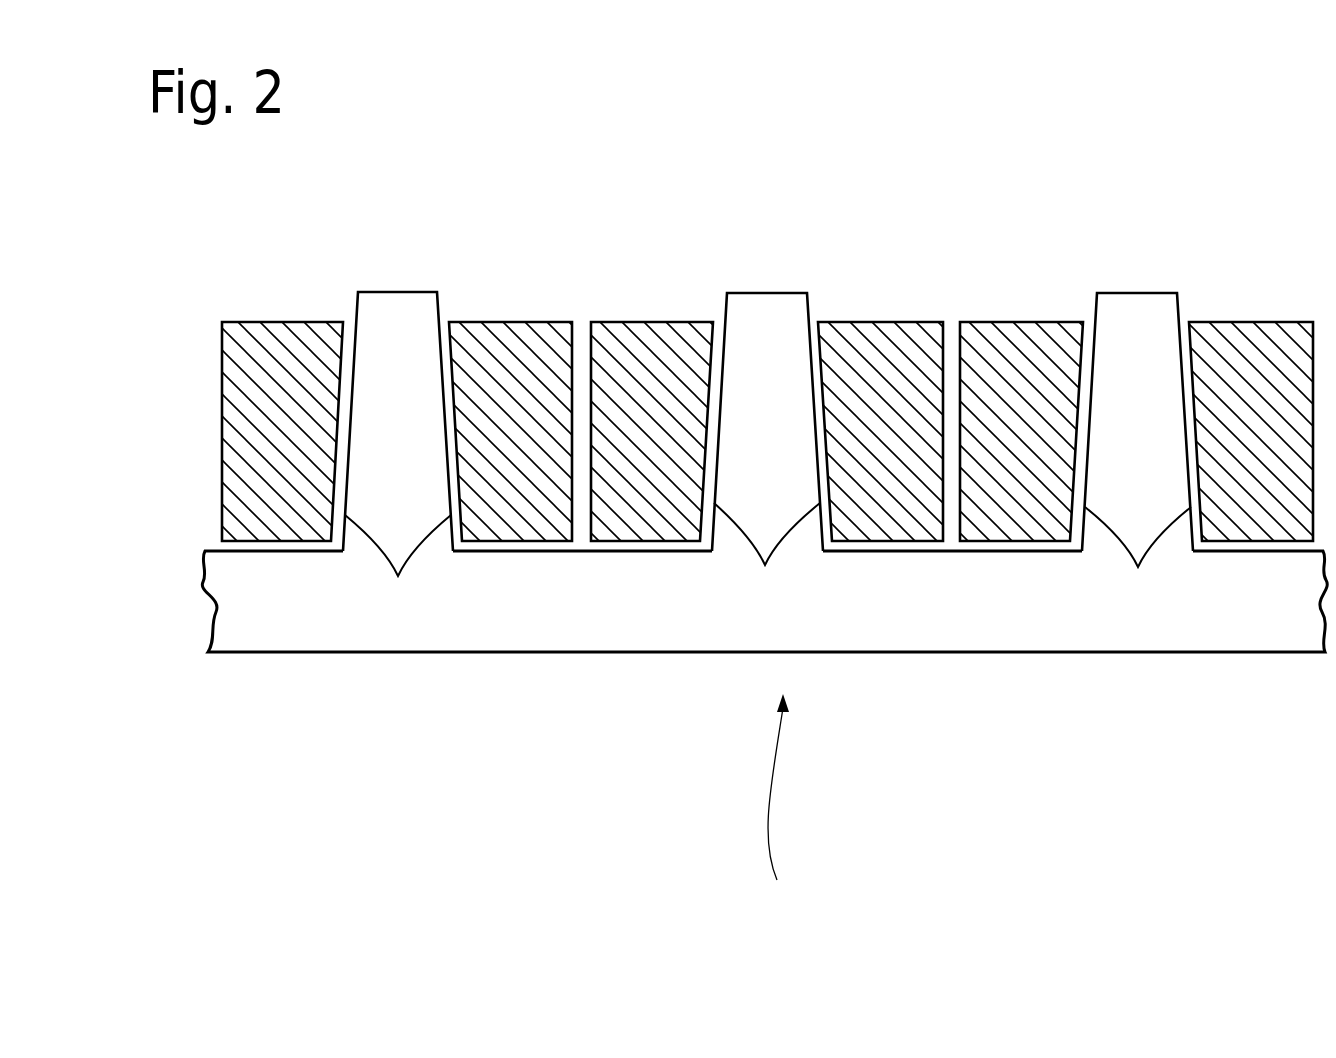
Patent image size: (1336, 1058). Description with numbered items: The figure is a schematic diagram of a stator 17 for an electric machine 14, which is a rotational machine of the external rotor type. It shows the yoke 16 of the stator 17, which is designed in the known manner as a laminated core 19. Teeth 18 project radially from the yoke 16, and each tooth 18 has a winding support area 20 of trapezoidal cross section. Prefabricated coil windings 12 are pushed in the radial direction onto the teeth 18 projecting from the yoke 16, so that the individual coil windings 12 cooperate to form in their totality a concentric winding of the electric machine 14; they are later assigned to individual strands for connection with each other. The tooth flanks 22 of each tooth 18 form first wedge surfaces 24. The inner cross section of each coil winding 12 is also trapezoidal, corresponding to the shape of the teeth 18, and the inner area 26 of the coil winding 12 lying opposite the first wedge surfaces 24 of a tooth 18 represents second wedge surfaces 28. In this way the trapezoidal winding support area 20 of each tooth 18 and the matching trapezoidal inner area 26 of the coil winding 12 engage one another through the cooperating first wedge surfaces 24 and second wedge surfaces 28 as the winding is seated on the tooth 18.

The coil winding 12 is at (273, 340).
The electric machine 14 is at (764, 292).
The yoke 16 is at (603, 607).
The stator 17 is at (733, 133).
The teeth 18 is at (766, 332).
The laminated core 19 is at (775, 809).
The winding support area 20 is at (766, 421).
The tooth flanks 22 is at (768, 575).
The first wedge surfaces 24 is at (768, 575).
The inner area 26 is at (766, 421).
The second wedge surfaces 28 is at (768, 421).